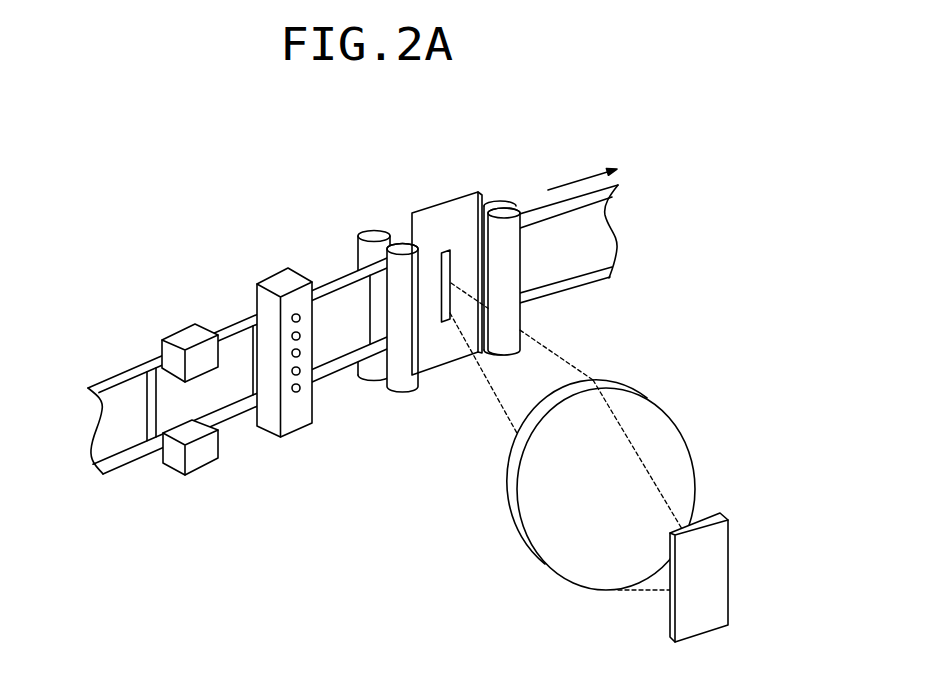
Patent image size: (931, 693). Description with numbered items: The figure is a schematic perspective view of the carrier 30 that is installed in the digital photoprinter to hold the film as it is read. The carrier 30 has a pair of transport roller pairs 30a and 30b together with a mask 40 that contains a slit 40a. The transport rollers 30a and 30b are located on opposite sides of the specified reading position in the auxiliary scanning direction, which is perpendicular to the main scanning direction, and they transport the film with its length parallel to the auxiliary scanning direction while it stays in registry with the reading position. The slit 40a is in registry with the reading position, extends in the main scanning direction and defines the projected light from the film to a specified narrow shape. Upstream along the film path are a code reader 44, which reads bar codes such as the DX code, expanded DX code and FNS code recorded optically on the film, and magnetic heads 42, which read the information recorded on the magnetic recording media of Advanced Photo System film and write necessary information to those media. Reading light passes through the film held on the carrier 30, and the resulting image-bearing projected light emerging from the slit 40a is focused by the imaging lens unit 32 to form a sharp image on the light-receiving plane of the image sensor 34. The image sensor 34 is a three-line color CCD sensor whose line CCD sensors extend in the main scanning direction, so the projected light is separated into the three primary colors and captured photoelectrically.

The carrier 30 is at (378, 192).
The transport roller pair 30a is at (401, 378).
The transport roller pair 30b is at (503, 286).
The imaging lens unit 32 is at (647, 424).
The image sensor 34 is at (710, 570).
The mask 40 is at (443, 352).
The slit 40a is at (445, 252).
The magnetic heads 42 is at (186, 340).
The code reader 44 is at (272, 280).